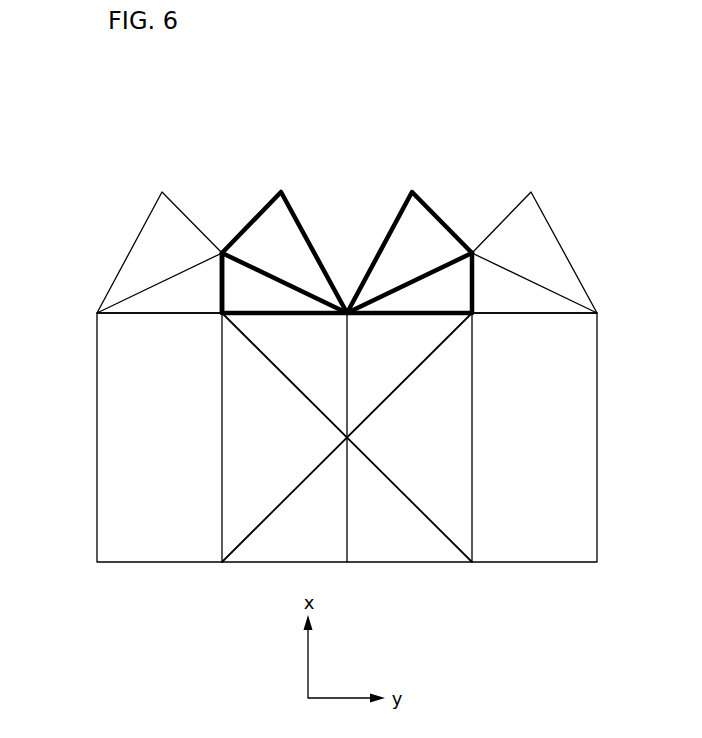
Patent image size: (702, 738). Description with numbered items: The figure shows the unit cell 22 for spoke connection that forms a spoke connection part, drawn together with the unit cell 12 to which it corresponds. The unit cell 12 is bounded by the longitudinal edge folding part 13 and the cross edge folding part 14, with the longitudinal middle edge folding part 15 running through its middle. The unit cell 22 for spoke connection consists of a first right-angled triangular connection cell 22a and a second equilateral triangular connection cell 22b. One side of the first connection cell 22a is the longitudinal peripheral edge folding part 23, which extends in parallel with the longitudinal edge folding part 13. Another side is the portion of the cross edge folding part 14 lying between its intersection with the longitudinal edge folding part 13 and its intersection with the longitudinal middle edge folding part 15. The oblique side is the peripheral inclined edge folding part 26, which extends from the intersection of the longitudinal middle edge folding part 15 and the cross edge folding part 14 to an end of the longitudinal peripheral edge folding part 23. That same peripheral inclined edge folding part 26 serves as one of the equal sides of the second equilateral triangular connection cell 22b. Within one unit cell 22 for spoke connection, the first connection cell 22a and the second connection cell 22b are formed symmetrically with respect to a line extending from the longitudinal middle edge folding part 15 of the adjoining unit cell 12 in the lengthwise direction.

The unit cell 12 is at (244, 482).
The longitudinal edge folding part 13 is at (222, 437).
The cross edge folding part 14 is at (280, 317).
The longitudinal middle edge folding part 15 is at (348, 520).
The unit cell for spoke connection 22 is at (398, 170).
The first right-angled triangular connection cell 22a is at (253, 293).
The second equilateral triangular connection cell 22b is at (285, 240).
The longitudinal peripheral edge folding part 23 is at (218, 283).
The peripheral inclined edge folding part 26 is at (283, 281).